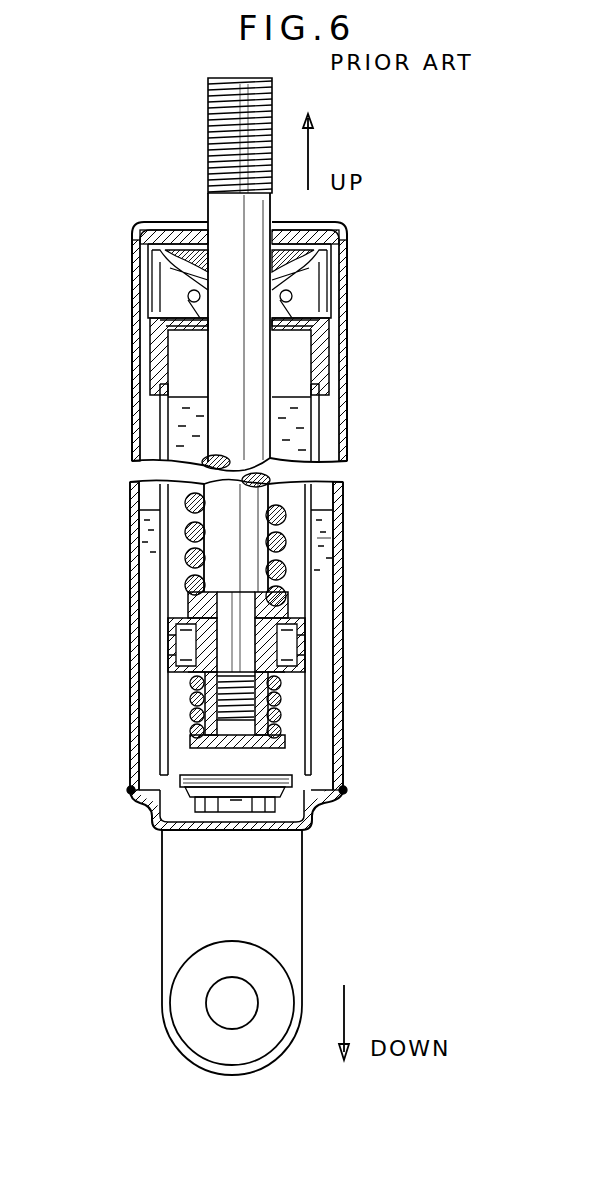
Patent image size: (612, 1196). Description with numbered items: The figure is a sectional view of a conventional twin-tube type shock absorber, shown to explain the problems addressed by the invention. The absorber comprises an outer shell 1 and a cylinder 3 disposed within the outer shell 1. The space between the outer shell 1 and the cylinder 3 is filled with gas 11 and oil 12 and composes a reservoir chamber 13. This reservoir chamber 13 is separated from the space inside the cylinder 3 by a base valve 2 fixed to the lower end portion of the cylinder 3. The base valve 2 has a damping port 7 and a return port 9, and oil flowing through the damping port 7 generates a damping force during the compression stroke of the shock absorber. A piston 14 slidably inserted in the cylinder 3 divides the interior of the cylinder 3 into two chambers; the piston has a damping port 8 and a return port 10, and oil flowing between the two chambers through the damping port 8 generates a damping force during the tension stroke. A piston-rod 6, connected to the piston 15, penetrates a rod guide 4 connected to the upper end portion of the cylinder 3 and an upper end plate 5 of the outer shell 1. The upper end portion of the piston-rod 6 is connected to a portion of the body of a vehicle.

The outer shell 1 is at (130, 550).
The base valve 2 is at (322, 802).
The cylinder 3 is at (318, 500).
The rod guide 4 is at (150, 362).
The upper end plate 5 is at (316, 224).
The piston-rod 6 is at (262, 352).
The damping port 7 is at (233, 812).
The damping port 8 is at (300, 628).
The return port 9 is at (300, 812).
The return port 10 is at (285, 660).
The gas 11 is at (150, 497).
The oil 12 is at (297, 418).
The reservoir chamber 13 is at (330, 548).
The piston 14 is at (320, 292).
The piston 15 is at (192, 632).